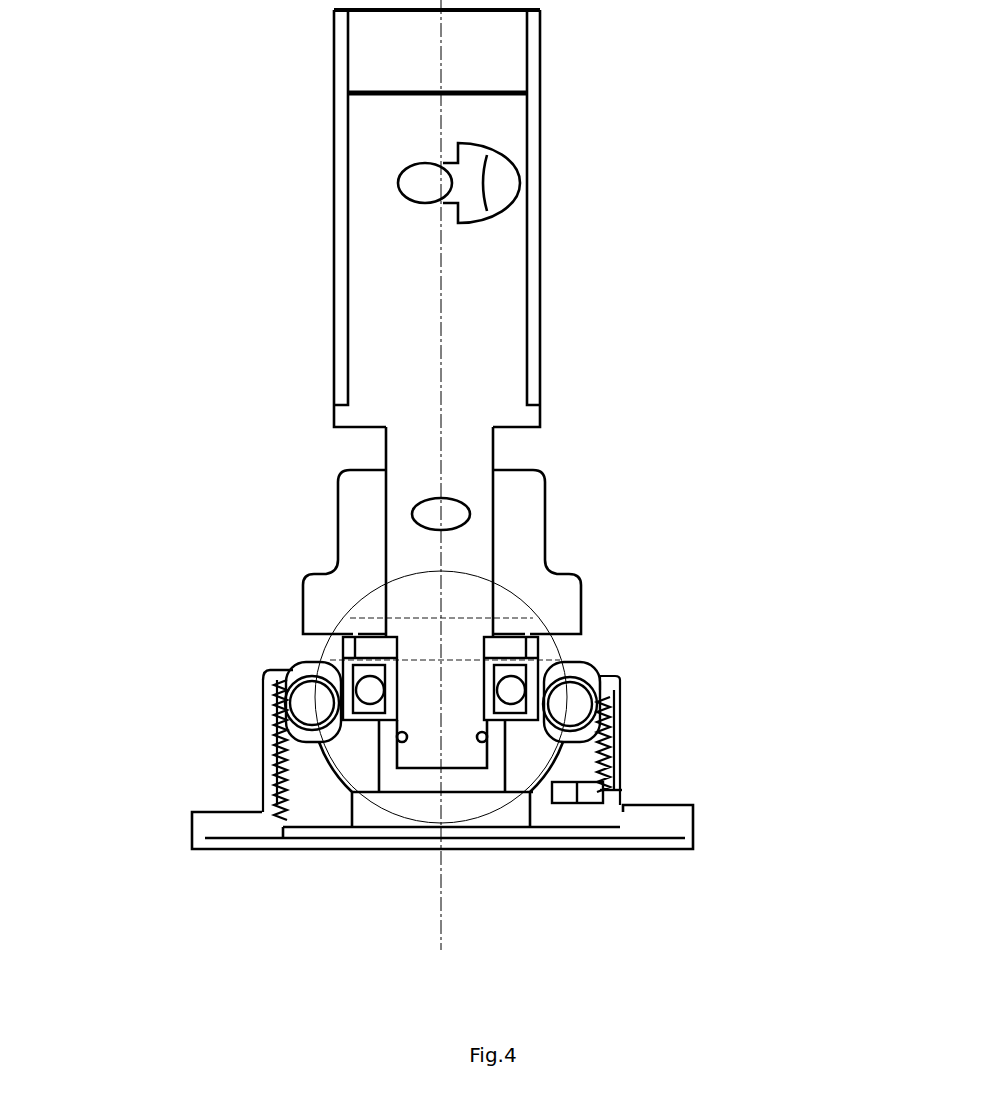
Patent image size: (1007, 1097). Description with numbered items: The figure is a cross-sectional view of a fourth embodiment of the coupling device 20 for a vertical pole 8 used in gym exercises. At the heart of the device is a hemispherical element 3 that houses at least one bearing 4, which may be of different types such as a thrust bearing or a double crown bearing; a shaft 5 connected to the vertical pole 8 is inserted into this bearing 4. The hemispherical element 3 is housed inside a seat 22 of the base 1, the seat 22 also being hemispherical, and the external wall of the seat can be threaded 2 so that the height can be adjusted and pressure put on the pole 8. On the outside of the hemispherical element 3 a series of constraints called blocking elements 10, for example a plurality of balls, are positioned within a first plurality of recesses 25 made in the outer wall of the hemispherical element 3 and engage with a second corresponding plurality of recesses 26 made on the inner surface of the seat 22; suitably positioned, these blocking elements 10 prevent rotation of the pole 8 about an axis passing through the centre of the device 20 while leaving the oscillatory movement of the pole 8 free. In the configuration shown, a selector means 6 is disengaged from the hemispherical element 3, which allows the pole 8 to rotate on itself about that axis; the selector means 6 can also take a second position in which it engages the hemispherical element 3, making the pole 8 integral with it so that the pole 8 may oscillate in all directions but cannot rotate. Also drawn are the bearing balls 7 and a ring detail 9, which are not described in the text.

The base 1 is at (620, 813).
The threaded external wall 2 is at (610, 760).
The hemispherical element 3 is at (357, 753).
The bearing 4 is at (370, 677).
The shaft 5 is at (489, 283).
The selector means 6 is at (352, 562).
The bearing ball 7 is at (575, 672).
The vertical pole 8 is at (538, 53).
The ring bottom 9 is at (615, 787).
The blocking elements 10 is at (582, 705).
The coupling device 20 is at (760, 302).
The seat 22 is at (582, 765).
The first plurality of recesses 25 is at (545, 737).
The second plurality of recesses 26 is at (293, 677).